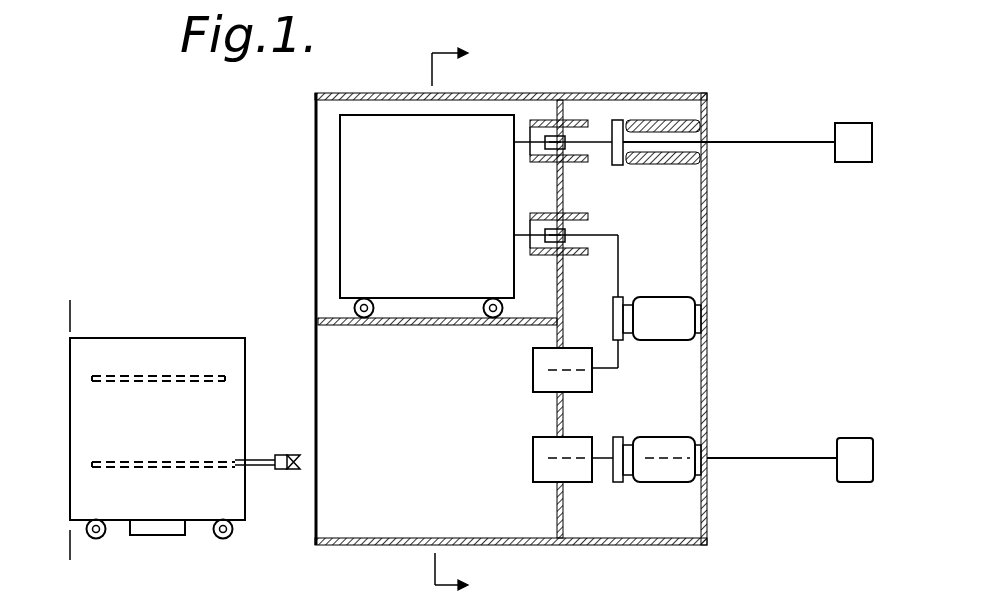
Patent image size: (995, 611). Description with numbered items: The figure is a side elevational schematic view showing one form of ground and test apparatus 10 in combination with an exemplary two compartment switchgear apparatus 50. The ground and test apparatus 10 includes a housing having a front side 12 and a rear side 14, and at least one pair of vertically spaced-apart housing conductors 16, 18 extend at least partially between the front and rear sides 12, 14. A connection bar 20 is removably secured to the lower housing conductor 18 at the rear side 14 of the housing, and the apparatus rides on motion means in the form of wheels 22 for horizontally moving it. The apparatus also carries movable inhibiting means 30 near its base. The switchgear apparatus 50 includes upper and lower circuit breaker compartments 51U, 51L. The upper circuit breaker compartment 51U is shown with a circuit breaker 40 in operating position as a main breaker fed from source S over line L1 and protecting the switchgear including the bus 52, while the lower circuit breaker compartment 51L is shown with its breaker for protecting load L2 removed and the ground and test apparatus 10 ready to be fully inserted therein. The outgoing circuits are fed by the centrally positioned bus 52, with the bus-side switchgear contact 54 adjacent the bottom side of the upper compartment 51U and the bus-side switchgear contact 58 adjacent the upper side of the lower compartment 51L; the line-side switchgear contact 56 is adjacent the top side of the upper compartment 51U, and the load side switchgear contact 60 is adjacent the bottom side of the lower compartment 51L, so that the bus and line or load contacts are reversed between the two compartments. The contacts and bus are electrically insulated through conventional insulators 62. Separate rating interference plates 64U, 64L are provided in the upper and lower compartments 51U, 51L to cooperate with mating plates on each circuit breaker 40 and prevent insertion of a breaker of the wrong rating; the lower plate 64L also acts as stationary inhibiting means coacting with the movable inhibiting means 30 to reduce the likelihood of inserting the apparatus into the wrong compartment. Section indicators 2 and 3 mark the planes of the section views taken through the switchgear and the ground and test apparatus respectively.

The ground and test apparatus 10 is at (156, 338).
The front side 12 is at (70, 405).
The rear side 14 is at (245, 376).
The upper housing conductor 16 is at (160, 382).
The lower housing conductor 18 is at (152, 462).
The connection bar 20 is at (262, 470).
The wheels 22 is at (98, 538).
The movable inhibiting means 30 is at (160, 535).
The circuit breaker 40 is at (430, 212).
The two compartment switchgear apparatus 50 is at (357, 93).
The upper circuit breaker compartment 51U is at (316, 201).
The lower circuit breaker compartment 51L is at (318, 412).
The bus 52 is at (613, 315).
The bus-side switchgear contact 54 is at (618, 258).
The line-side switchgear contact 56 is at (598, 148).
The bus-side switchgear contact 58 is at (597, 370).
The load side switchgear contact 60 is at (604, 482).
The insulators 62 is at (655, 164).
The rating interference plate 64U is at (445, 316).
The rating interference plate 64L is at (444, 538).
The supply line L1 is at (784, 142).
The load L2 is at (790, 460).
The source S is at (853, 142).
The section line 2- 2 is at (464, 325).
The section line 3- 3 is at (64, 308).